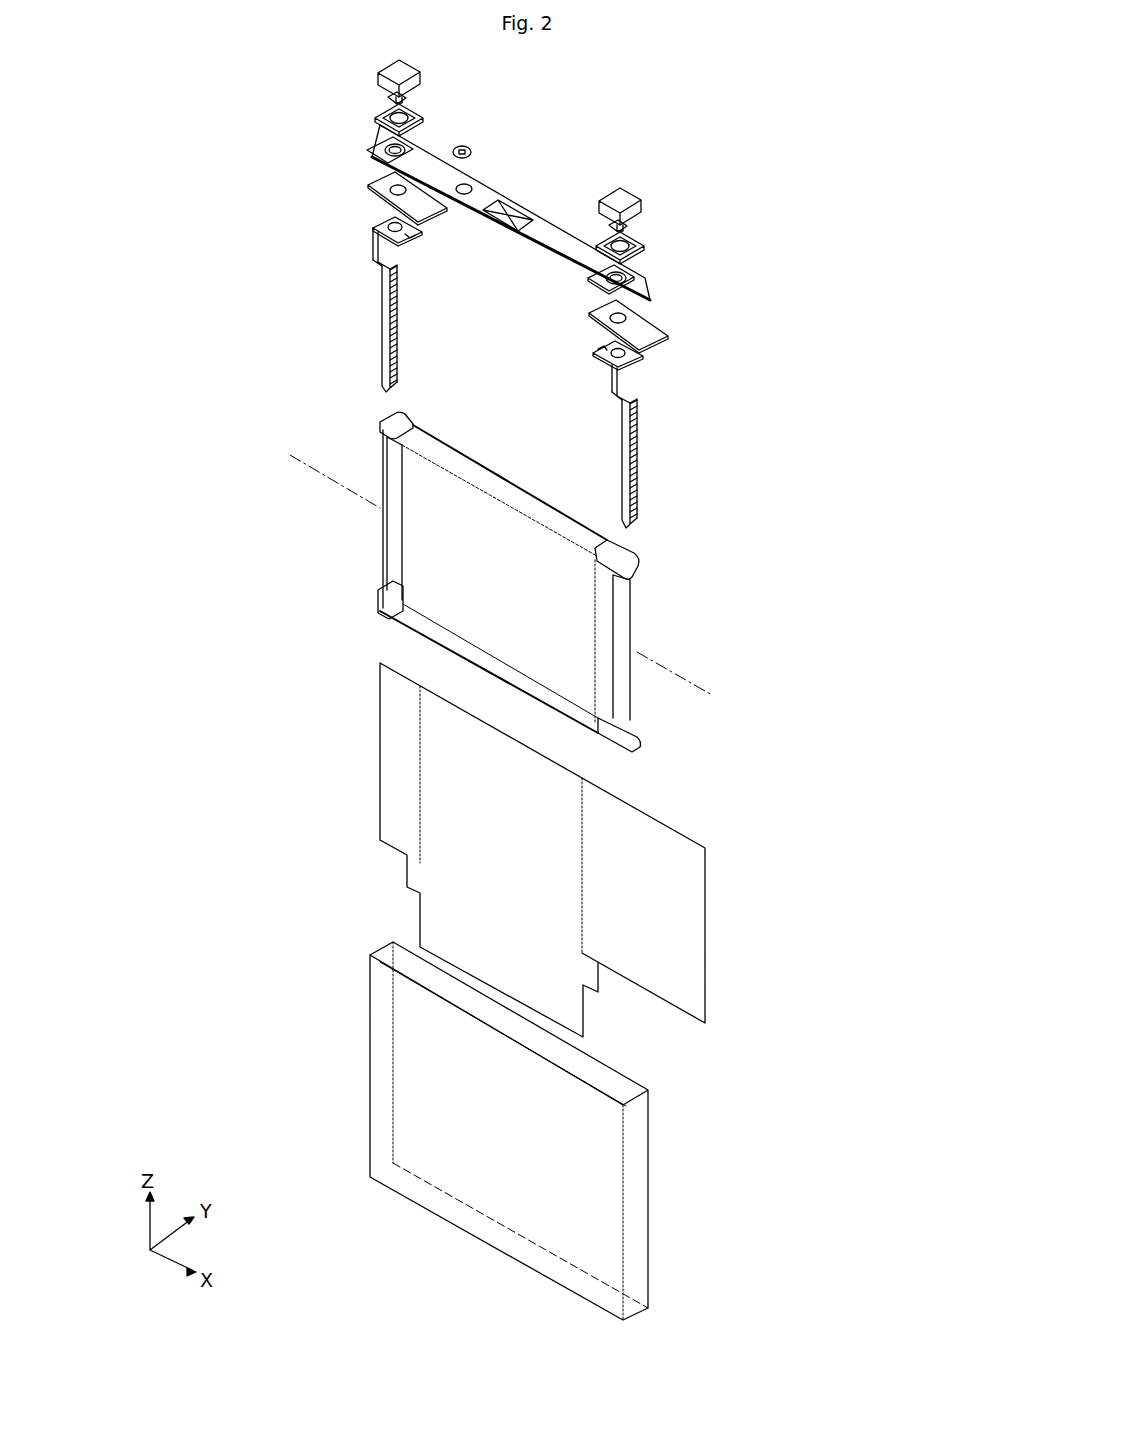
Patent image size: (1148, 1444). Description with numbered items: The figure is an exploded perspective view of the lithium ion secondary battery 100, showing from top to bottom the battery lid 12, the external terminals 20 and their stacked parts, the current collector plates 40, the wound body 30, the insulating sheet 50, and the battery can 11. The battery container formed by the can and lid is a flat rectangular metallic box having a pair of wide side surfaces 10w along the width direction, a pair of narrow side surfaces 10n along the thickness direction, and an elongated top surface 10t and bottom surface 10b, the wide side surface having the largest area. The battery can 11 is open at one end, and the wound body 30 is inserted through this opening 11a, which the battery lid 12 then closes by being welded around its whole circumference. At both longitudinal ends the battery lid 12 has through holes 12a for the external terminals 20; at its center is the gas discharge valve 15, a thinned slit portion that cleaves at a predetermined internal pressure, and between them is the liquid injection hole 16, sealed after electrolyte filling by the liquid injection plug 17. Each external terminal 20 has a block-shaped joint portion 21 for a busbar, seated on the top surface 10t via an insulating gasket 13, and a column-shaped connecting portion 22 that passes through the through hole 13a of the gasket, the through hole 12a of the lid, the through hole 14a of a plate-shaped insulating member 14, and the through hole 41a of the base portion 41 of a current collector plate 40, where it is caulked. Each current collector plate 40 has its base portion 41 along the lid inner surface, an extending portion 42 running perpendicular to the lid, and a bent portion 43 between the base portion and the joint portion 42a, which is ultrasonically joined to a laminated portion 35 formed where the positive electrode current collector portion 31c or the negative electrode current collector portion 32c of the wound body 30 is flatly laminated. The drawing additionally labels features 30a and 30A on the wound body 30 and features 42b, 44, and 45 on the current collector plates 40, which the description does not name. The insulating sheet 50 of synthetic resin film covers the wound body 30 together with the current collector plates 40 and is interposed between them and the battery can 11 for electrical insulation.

The secondary battery 100 is at (800, 230).
The top surface 10t is at (422, 166).
The wide side surfaces 10w is at (440, 1138).
The bottom surface 10b is at (498, 1240).
The narrow side surfaces 10n is at (637, 1253).
The battery can 11 is at (651, 1201).
The opening 11a is at (622, 1083).
The battery lid 12 is at (557, 245).
The through holes 12a is at (368, 148).
The gaskets 13 is at (375, 118).
The through holes 13a is at (403, 113).
The insulating members 14 is at (378, 184).
The through holes 14a is at (592, 305).
The gas discharge valve 15 is at (512, 212).
The liquid injection hole 16 is at (470, 185).
The liquid injection plug 17 is at (468, 147).
The external terminals 20 is at (420, 60).
The joint portions 21 is at (380, 78).
The connecting portions 22 is at (388, 100).
The wound body 30 is at (640, 620).
The opening of holder frame 30a is at (472, 560).
The center axis of holder frame 30A is at (710, 690).
The positive electrode current collector portion 31c is at (396, 524).
The negative electrode current collector portion 32c is at (640, 700).
The laminated portion 35 is at (384, 466).
The current collector plates 40 is at (388, 310).
The base portions 41 is at (378, 222).
The through holes 41a is at (418, 238).
The extending portions 42 is at (384, 360).
The joint portions 42a is at (399, 330).
The step portion of leg 42b is at (622, 394).
The bent portions 43 is at (374, 242).
The bent portion 44 is at (378, 263).
The edge portion of leg 45 is at (400, 268).
The insulating sheet 50 is at (680, 942).